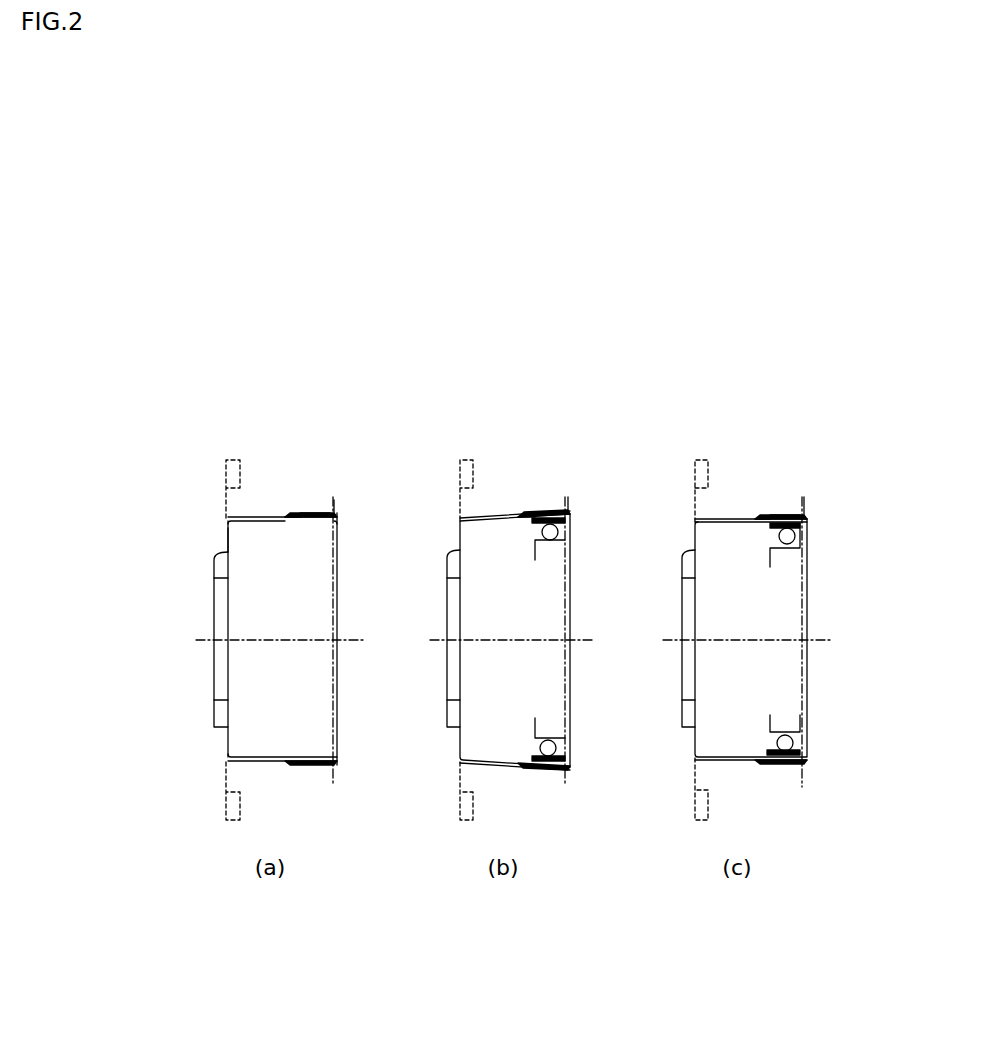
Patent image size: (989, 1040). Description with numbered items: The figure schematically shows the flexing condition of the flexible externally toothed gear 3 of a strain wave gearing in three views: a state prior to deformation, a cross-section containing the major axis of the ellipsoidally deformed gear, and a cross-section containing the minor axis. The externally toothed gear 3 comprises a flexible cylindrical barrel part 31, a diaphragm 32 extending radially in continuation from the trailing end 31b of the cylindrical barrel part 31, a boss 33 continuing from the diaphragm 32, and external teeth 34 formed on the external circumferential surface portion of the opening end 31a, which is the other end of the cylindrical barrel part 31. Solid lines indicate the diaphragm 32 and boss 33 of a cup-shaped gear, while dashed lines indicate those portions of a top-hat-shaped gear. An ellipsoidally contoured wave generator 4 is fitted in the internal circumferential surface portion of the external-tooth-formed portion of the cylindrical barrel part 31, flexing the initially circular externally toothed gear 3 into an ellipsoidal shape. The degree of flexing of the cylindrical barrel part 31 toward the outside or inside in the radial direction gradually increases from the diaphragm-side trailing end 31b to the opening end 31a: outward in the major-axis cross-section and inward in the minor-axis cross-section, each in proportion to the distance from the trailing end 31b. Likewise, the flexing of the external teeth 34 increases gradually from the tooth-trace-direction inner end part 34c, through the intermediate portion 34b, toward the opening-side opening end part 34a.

The flexible externally toothed gear 3 is at (476, 564).
The cylindrical barrel part 31 is at (263, 522).
The opening end 31a is at (338, 517).
The trailing end 31b is at (227, 519).
The diaphragm 32 is at (227, 537).
The boss 33 is at (220, 567).
The external teeth 34 is at (318, 506).
The opening end part 34a is at (337, 515).
The inclined portion 34b is at (307, 514).
The inner end part 34c is at (297, 516).
The wave generator 4 is at (569, 551).